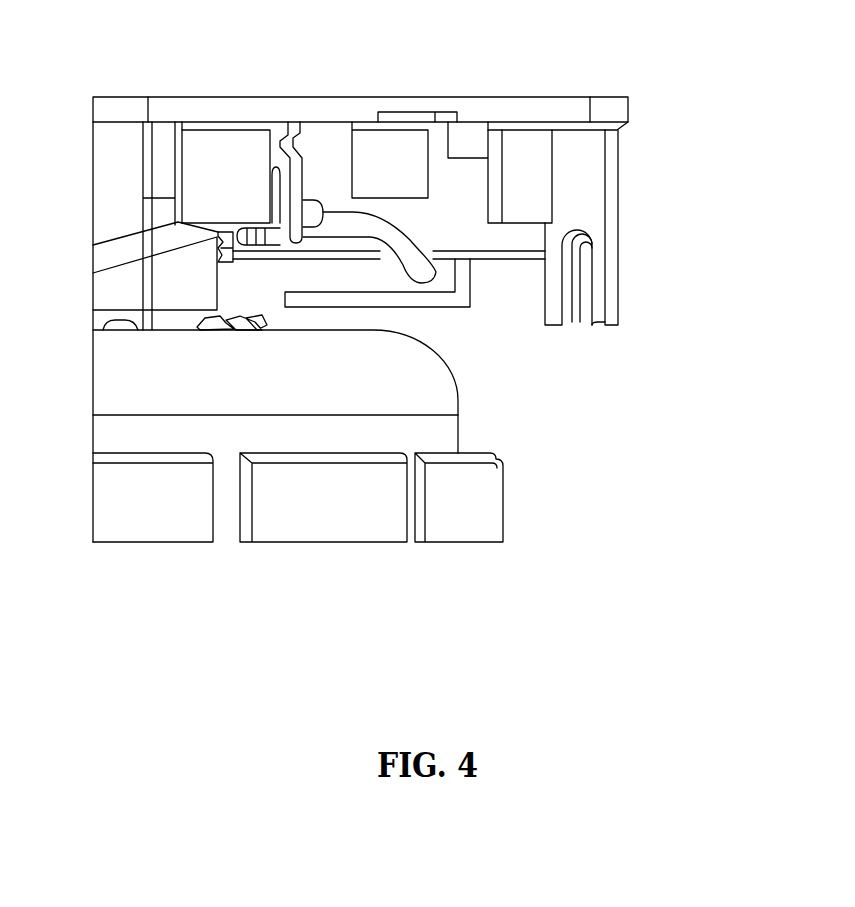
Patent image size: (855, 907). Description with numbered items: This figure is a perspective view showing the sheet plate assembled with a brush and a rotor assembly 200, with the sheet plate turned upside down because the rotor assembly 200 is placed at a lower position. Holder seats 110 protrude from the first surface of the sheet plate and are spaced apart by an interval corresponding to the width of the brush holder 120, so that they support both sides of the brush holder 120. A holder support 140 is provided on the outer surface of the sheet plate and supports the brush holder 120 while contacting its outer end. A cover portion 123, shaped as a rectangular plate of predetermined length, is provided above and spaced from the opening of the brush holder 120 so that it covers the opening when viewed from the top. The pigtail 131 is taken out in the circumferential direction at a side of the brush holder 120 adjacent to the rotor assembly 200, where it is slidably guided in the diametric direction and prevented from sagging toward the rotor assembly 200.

The holder seat 110 is at (476, 143).
The brush holder 120 is at (520, 240).
The cover portion 123 is at (445, 303).
The pigtail 131 is at (370, 222).
The holder support 140 is at (587, 172).
The rotor assembly 200 is at (317, 438).